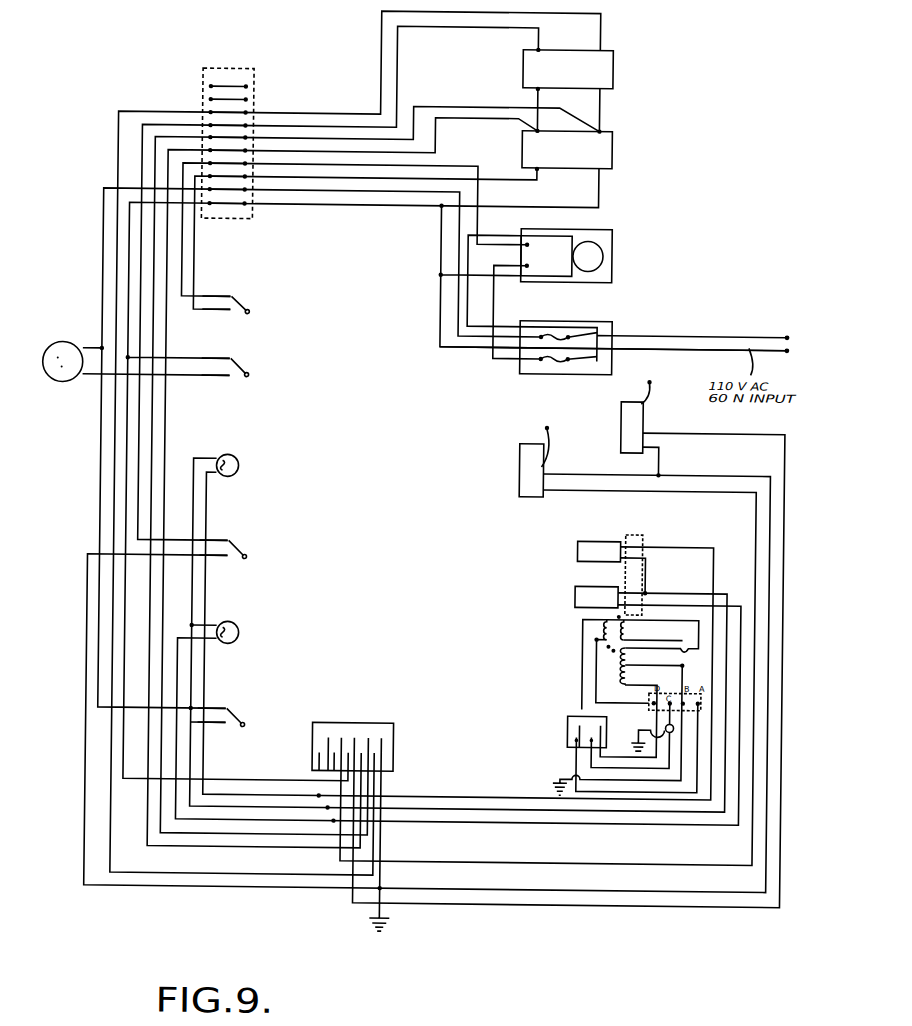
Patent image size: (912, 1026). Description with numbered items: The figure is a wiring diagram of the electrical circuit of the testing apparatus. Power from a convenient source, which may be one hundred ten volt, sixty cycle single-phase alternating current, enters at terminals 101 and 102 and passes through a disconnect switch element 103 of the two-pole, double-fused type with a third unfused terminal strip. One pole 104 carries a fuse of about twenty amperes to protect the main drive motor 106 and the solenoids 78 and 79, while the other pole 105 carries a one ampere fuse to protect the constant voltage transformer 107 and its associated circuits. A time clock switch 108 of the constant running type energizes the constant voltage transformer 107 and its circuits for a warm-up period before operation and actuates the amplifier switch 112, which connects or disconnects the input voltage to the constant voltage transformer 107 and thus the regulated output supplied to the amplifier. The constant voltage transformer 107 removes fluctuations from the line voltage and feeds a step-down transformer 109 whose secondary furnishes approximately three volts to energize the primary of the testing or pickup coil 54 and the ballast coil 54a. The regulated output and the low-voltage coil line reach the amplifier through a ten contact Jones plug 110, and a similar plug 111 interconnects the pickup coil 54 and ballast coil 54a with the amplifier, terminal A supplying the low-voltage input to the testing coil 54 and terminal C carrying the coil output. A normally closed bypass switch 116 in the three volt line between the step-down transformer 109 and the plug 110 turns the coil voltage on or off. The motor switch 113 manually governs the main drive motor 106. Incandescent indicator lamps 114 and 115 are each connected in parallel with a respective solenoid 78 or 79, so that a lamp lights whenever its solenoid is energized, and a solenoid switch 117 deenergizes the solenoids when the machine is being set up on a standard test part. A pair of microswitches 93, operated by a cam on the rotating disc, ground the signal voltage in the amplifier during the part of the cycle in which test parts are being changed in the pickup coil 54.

The pickup coil 54 is at (606, 629).
The ballast coil 54a is at (618, 665).
The solenoid 78 is at (578, 550).
The solenoid 79 is at (576, 596).
The microswitches 93 is at (620, 444).
The terminal 101 is at (785, 334).
The terminal 102 is at (785, 347).
The disconnect switch element 103 is at (610, 320).
The pole 104 is at (584, 331).
The pole 105 is at (594, 361).
The main drive motor 106 is at (62, 386).
The constant voltage transformer 107 is at (608, 155).
The time clock switch 108 is at (609, 237).
The step-down transformer 109 is at (608, 73).
The ten contact Jones plug 110 is at (396, 737).
The plug 111 is at (570, 739).
The amplifier switch 112 is at (301, 296).
The motor switch 113 is at (281, 357).
The indicator lamp 114 is at (299, 457).
The indicator lamp 115 is at (304, 622).
The bypass switch 116 is at (294, 540).
The solenoid switch 117 is at (287, 707).